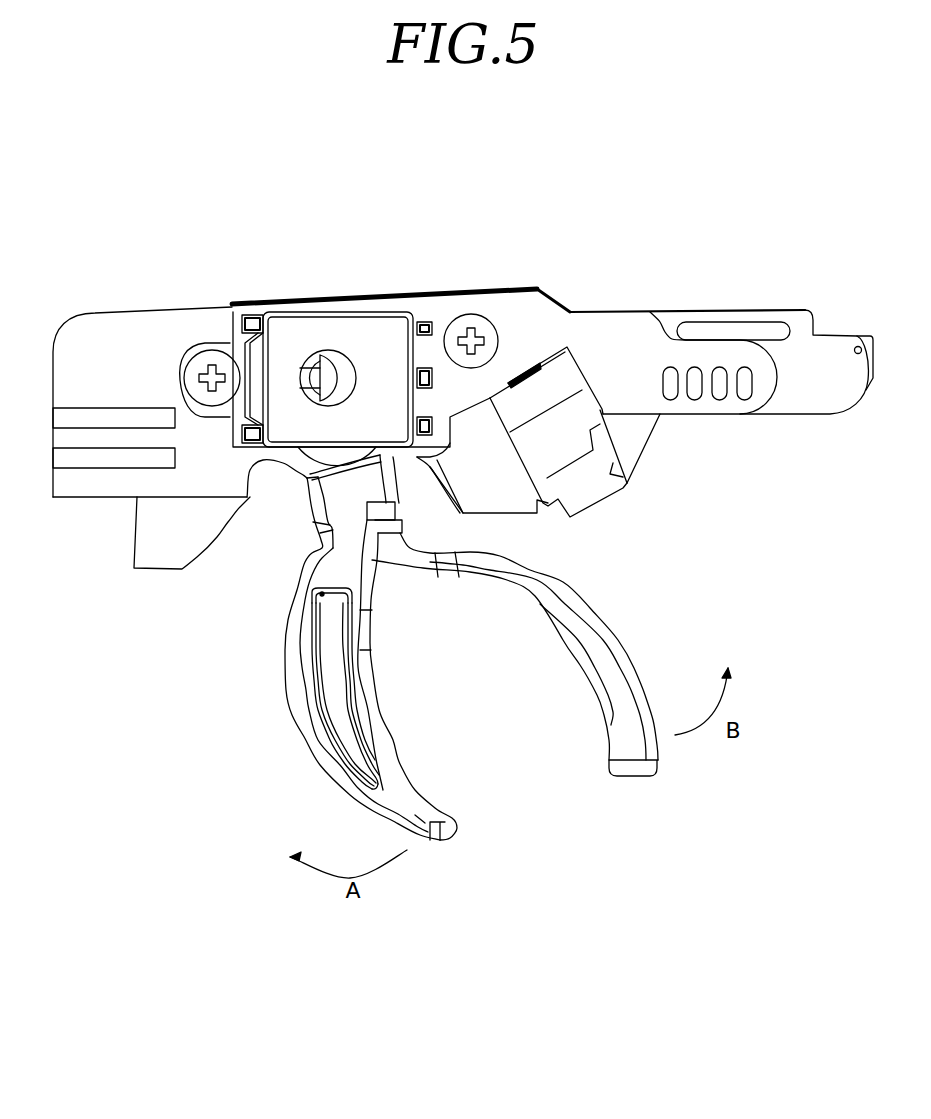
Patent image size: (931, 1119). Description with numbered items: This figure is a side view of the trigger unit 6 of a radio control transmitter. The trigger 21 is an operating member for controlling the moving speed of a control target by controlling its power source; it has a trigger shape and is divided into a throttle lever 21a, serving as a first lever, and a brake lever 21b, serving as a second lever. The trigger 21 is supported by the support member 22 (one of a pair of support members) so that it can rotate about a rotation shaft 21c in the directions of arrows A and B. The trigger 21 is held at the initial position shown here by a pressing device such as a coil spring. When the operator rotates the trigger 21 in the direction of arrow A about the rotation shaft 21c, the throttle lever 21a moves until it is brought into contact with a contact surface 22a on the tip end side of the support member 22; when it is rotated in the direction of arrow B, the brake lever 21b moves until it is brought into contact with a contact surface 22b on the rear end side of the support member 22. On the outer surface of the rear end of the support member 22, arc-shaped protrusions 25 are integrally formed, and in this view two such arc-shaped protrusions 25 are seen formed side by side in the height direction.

The cable holder (clamp unit) 6 is at (378, 207).
The support member 22 is at (183, 323).
The contact surface 22a is at (213, 560).
The contact surface 22b is at (443, 490).
The arc-shaped protrusions 25 is at (112, 420).
The trigger 21 is at (438, 925).
The throttle lever 21a is at (428, 845).
The brake lever 21b is at (627, 775).
The rotation shaft 21c is at (320, 353).